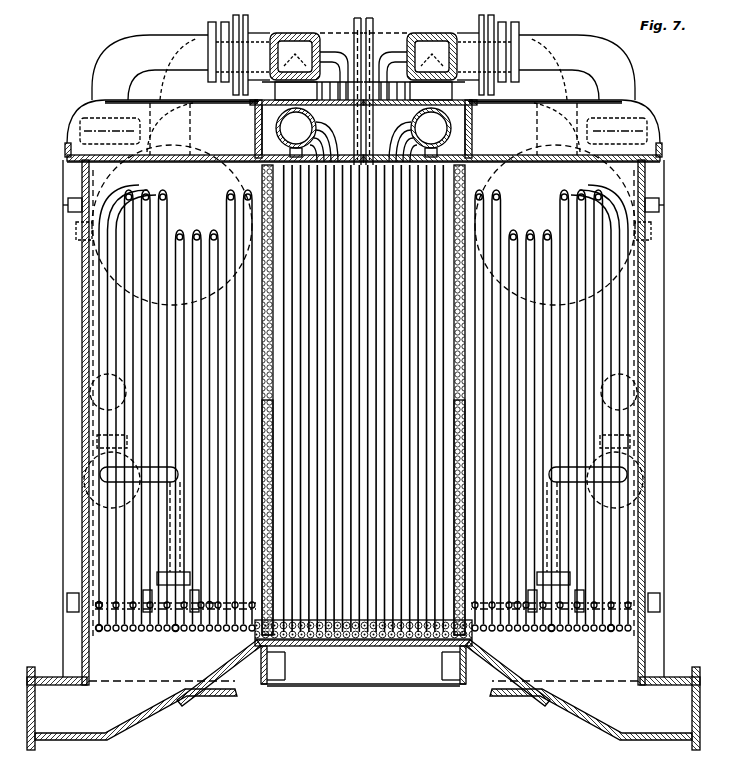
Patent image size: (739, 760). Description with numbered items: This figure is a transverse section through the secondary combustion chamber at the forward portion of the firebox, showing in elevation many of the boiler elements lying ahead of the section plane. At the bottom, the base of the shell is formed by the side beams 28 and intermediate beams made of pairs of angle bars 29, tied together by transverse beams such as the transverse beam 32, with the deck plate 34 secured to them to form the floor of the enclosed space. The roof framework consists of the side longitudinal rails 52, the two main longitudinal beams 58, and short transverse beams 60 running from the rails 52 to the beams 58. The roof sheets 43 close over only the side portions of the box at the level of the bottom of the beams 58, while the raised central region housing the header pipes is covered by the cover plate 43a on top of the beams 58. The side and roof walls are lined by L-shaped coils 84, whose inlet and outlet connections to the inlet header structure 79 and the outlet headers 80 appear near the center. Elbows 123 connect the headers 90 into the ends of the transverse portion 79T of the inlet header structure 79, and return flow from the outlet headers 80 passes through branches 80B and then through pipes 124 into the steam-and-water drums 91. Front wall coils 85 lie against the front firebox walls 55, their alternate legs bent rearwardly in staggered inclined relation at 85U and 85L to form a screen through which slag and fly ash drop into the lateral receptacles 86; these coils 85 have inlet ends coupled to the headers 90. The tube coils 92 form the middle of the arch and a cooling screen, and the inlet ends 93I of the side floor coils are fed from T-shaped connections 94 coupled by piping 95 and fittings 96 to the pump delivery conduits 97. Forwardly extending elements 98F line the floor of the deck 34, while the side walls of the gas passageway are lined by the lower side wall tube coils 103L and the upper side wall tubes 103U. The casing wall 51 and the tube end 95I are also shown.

The inlet header structure 79 is at (272, 45).
The transverse portion of the inlet header structure 79T is at (330, 33).
The roof sheet or cover plate 43a is at (478, 33).
The elbows 123 is at (363, 67).
The pipes 124 is at (363, 69).
The short transverse beams 60 is at (363, 113).
The main longitudinal beams 58 is at (255, 128).
The outlet headers 80 is at (363, 91).
The branches 80B is at (363, 118).
The roof sheets 43 is at (143, 150).
The side longitudinal rails 52 is at (66, 150).
The headers 90 is at (68, 194).
The L-shaped coils 84 is at (92, 275).
The steam-and-water drums 91 is at (100, 295).
The front wall coils 85 is at (145, 348).
The pump delivery conduits 97 is at (92, 390).
The casing wall 51 is at (82, 409).
The fittings 96 is at (97, 438).
The piping 95 is at (100, 497).
The T-shaped connections 94 is at (157, 580).
The side beams 28 is at (50, 612).
The front firebox walls 55 is at (116, 628).
The inlet ends of the side floor tube coils 93I is at (102, 630).
The lower staggered inclined legs 85L is at (178, 632).
The upper staggered inclined legs 85U is at (211, 612).
The tube end 95I is at (611, 634).
The lateral receptacles 86 is at (363, 708).
The angle bars 29 is at (267, 667).
The deck plate 34 is at (318, 682).
The transverse beam 32 is at (383, 647).
The tube coils 92 is at (320, 624).
The forwardly extending floor coil elements 98F is at (360, 687).
The upper side wall tubes 103U is at (274, 338).
The side wall tube coils 103L is at (274, 415).